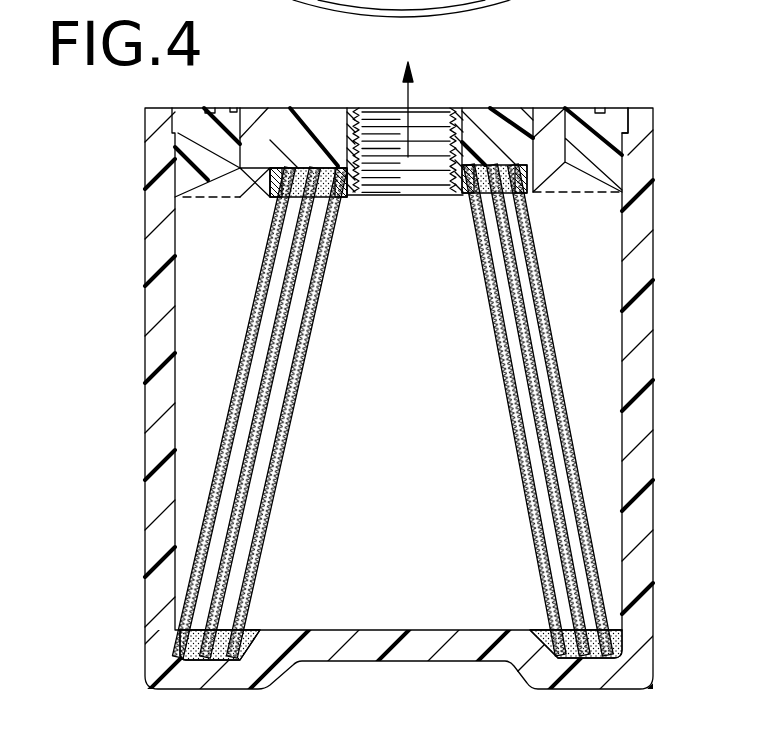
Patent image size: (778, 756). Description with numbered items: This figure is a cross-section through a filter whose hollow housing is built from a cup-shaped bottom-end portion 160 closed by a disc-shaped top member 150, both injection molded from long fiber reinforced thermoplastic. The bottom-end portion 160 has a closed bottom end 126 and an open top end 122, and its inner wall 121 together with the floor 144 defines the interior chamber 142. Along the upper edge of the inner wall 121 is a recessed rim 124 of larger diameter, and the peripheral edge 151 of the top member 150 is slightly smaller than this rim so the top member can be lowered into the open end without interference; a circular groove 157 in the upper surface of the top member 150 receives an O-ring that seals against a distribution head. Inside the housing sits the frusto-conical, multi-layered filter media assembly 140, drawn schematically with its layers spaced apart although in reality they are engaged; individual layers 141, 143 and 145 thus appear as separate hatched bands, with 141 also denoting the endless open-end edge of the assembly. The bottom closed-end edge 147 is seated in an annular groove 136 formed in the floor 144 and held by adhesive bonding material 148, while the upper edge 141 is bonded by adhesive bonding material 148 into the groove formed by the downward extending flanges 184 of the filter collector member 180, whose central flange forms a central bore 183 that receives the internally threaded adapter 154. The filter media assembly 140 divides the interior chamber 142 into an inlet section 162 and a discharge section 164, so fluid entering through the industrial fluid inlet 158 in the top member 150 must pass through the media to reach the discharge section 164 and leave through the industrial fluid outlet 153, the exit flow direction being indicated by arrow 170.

The inner wall 121 is at (170, 254).
The open or top-end 122 is at (163, 176).
The recessed rim 124 is at (648, 108).
The bottom or closed-end 126 is at (148, 664).
The annular groove 136 is at (650, 631).
The filter media assembly 140 is at (346, 411).
The top or open-end portion edge 141 is at (282, 200).
The interior chamber 142 is at (590, 263).
The hollow fiber membrane 143 is at (230, 422).
The floor or bottom surface 144 is at (420, 630).
The hollow fiber membrane 145 is at (238, 346).
The bottom or closed-end portion edge 147 is at (185, 604).
The adhesive bonding material 148 is at (343, 200).
The top member 150 is at (323, 128).
The peripheral edge 151 is at (180, 133).
The industrial fluid outlet 153 is at (437, 127).
The adapter 154 is at (360, 128).
The circular groove 157 is at (600, 108).
The industrial fluid inlet 158 is at (253, 193).
The bottom-end portion 160 is at (640, 155).
The inlet section 162 is at (213, 311).
The discharge section 164 is at (478, 440).
The arrow 170 is at (412, 92).
The filter collector member 180 is at (498, 163).
The central bore 183 is at (463, 196).
The downward extending flange 184 is at (483, 195).